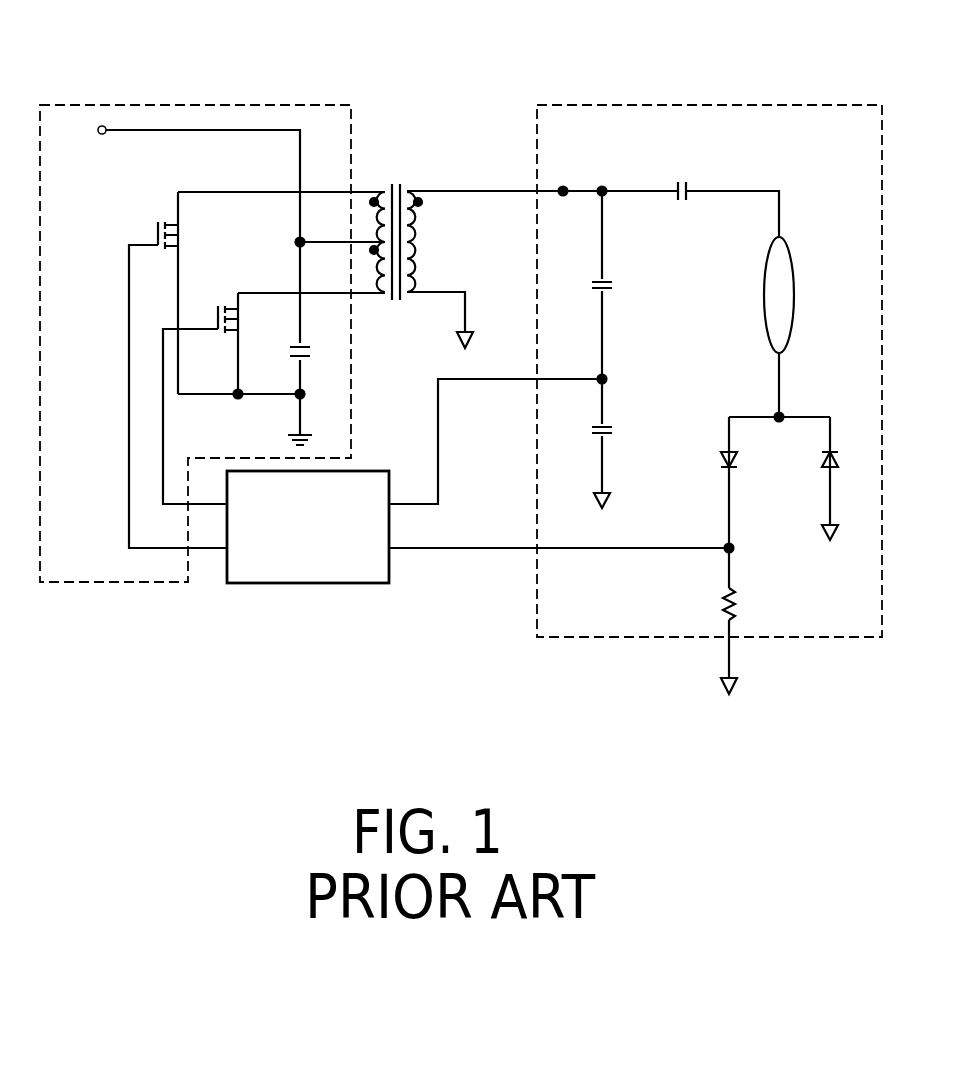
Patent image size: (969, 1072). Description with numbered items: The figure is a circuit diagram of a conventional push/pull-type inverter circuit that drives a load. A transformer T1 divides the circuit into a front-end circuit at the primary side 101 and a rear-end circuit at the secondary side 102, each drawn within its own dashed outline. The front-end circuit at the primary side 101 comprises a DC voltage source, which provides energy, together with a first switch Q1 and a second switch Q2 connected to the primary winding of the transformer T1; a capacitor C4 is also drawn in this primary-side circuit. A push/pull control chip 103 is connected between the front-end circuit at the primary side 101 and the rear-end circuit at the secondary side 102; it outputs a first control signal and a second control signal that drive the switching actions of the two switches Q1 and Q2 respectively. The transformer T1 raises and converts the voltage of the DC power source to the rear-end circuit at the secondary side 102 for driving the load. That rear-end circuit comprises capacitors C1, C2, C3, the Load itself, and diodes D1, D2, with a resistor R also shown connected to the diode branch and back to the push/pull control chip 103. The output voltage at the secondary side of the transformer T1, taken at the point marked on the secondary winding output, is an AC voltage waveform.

The primary side 101 is at (194, 104).
The secondary side 102 is at (708, 104).
The push/pull control chip 103 is at (292, 584).
The first switch Q1 is at (178, 370).
The second switch Q2 is at (218, 398).
The capacitor C4 is at (316, 352).
The transformer T1 is at (421, 254).
The capacitor C1 is at (681, 179).
The capacitor C2 is at (619, 285).
The capacitor C3 is at (619, 436).
The load Load is at (810, 295).
The diode D1 is at (713, 502).
The diode D2 is at (847, 471).
The resistor R is at (740, 604).